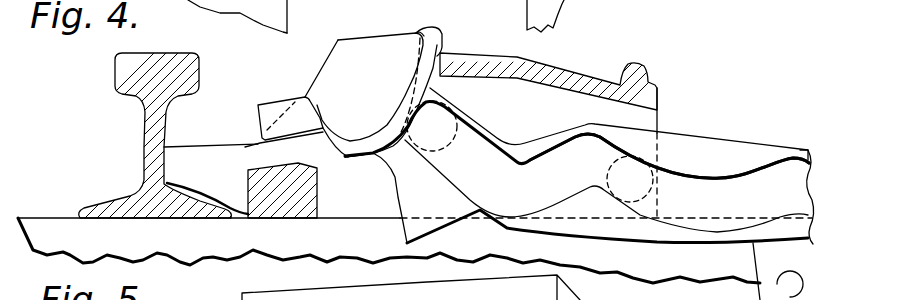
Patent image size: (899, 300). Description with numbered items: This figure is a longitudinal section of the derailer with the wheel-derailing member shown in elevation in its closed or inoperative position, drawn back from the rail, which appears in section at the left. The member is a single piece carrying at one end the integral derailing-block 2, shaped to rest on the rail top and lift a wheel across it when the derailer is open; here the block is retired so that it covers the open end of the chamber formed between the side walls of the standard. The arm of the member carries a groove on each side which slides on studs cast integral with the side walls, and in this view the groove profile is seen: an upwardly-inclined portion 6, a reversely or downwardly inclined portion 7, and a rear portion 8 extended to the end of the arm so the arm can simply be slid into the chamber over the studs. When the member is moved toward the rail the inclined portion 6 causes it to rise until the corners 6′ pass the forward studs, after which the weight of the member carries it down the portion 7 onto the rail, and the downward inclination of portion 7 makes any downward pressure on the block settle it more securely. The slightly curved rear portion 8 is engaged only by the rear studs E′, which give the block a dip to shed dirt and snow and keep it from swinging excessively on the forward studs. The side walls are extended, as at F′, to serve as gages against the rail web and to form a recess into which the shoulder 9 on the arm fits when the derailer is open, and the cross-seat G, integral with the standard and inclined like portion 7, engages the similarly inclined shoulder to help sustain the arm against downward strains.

The derailing-block 2 is at (359, 38).
The upwardly-inclined portion 6 is at (485, 140).
The corners 6′ is at (517, 166).
The reversely or downwardly inclined portion 7 is at (555, 153).
The rear portion 8 is at (707, 190).
The shoulder or projection 9 is at (403, 233).
The rear studs E′ is at (438, 152).
The side-wall extensions F′ is at (200, 146).
The cross-seat G is at (260, 170).